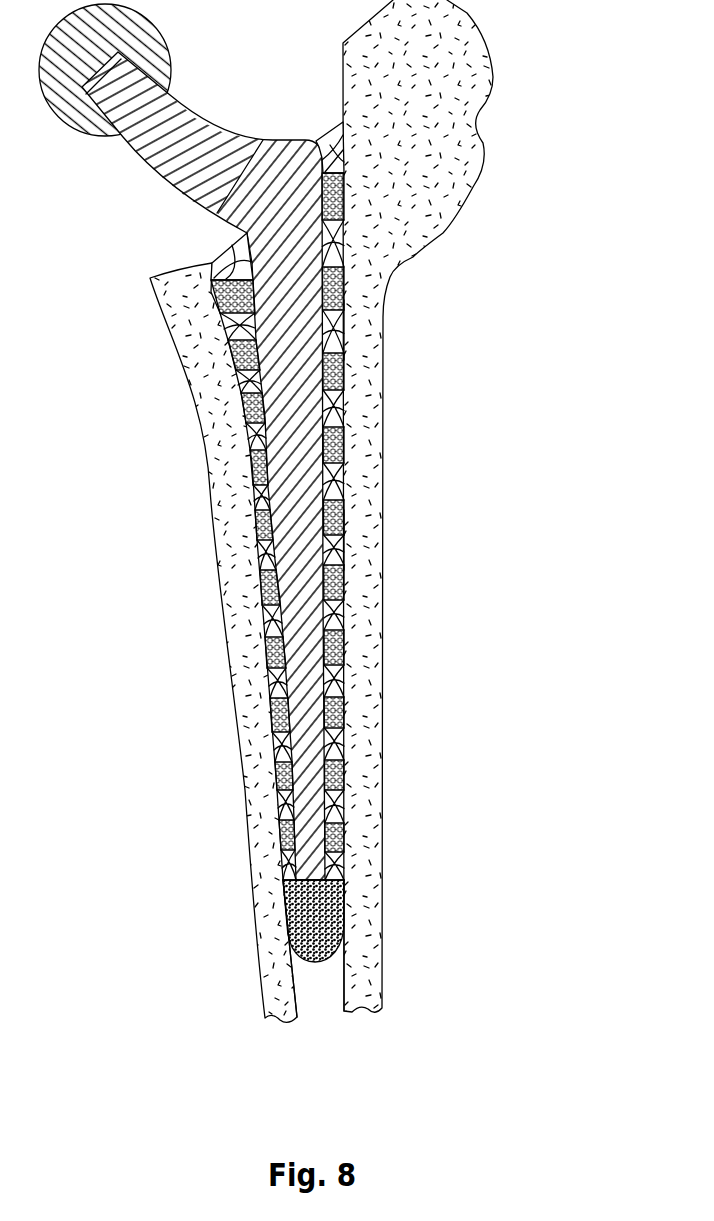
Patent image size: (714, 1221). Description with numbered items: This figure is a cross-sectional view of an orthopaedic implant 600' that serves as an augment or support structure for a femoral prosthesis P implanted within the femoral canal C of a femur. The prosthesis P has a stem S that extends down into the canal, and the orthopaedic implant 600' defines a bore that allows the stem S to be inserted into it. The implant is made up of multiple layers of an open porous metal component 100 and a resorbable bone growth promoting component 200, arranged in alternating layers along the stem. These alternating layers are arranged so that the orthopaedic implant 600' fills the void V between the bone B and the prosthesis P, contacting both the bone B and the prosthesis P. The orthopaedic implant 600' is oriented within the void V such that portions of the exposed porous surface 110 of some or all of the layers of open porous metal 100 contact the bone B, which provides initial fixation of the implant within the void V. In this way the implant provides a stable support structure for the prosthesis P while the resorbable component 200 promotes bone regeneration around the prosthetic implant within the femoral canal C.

The prosthesis P is at (245, 447).
The stem S is at (310, 438).
The bone B is at (460, 178).
The femoral canal C is at (322, 997).
The void V is at (340, 882).
The open porous metal component 100 is at (263, 618).
The resorbable bone growth promoting component 200 is at (343, 645).
The exposed porous surface 110 is at (360, 327).
The orthopaedic implant 600' is at (431, 540).